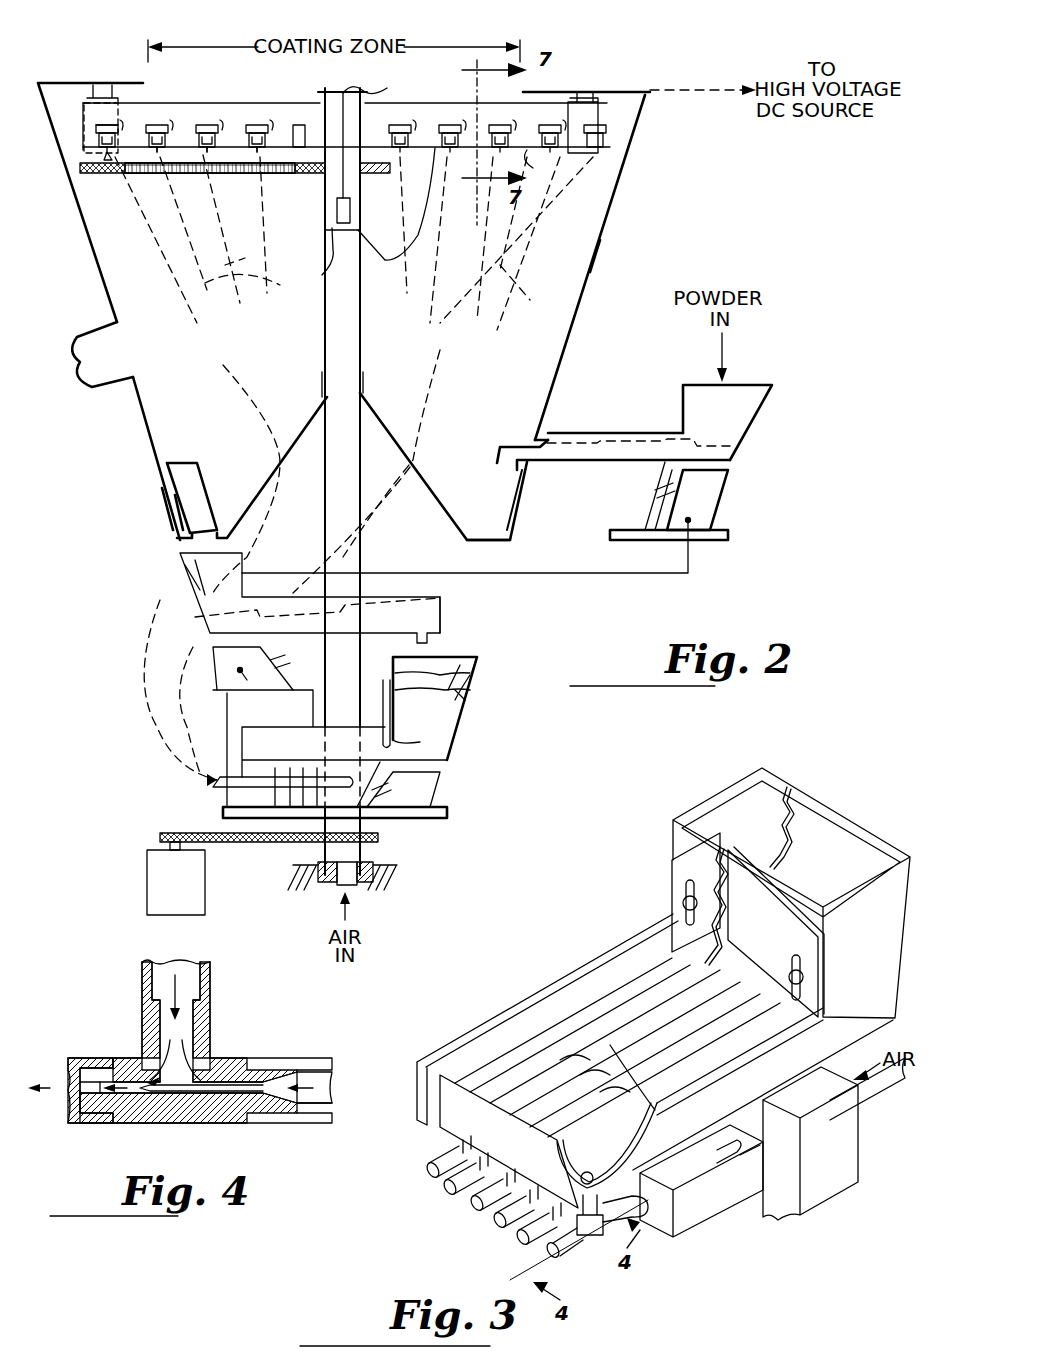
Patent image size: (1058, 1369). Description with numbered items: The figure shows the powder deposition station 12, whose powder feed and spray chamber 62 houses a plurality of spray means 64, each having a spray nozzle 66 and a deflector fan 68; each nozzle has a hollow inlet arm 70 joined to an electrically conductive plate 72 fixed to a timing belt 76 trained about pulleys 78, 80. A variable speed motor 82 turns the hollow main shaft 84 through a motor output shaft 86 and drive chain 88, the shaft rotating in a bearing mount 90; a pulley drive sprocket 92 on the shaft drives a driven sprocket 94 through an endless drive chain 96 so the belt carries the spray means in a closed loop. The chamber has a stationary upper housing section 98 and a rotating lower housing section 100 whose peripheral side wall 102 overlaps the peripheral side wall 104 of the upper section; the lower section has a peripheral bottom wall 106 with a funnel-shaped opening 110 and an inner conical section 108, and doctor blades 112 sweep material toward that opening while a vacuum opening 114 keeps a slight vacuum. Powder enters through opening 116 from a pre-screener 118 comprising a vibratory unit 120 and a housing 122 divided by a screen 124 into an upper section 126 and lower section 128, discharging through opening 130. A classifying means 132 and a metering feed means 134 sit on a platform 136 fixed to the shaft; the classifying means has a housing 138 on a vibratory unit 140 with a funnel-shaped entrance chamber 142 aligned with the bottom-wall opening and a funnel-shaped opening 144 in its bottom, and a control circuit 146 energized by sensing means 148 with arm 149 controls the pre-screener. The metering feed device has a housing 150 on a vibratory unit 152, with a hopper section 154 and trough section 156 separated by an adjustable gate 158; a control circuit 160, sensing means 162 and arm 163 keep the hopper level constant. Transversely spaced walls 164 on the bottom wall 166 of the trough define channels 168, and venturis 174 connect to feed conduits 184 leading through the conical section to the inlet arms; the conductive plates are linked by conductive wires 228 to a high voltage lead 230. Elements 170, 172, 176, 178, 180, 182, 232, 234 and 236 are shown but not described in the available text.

In FIG. 2, the powder deposition station 12 is at (627, 195).
In FIG. 2, the powder feed and spray chamber 62 is at (583, 293).
In FIG. 2, the spray means 64 is at (257, 127).
In FIG. 2, the spray nozzle 66 is at (107, 127).
In FIG. 2, the deflector fan 68 is at (127, 127).
In FIG. 2, the hollow inlet arm 70 is at (207, 153).
In FIG. 2, the electrically conductive plate 72 is at (230, 155).
In FIG. 2, the timing belt 76 is at (540, 110).
In FIG. 2, the pulley 78 is at (92, 85).
In FIG. 2, the pulley 80 is at (597, 102).
In FIG. 2, the variable speed motor 82 is at (160, 883).
In FIG. 2, the main shaft 84 is at (357, 565).
In FIG. 2, the motor output shaft 86 is at (170, 843).
In FIG. 2, the drive chain 88 is at (248, 843).
In FIG. 2, the bearing mount 90 is at (373, 870).
In FIG. 2, the pulley drive sprocket 92 is at (318, 173).
In FIG. 2, the driven sprocket 94 is at (112, 160).
In FIG. 2, the endless drive chain 96 is at (163, 155).
In FIG. 2, the upper housing section 98 is at (603, 243).
In FIG. 2, the lower housing section 100 is at (518, 527).
In FIG. 2, the peripheral side wall 102 is at (527, 497).
In FIG. 2, the peripheral side wall 104 is at (512, 493).
In FIG. 2, the peripheral bottom wall 106 is at (487, 533).
In FIG. 2, the inner conical section 108 is at (440, 503).
In FIG. 2, the funnel-shaped opening 110 is at (200, 553).
In FIG. 2, the doctor blades 112 is at (193, 487).
In FIG. 2, the opening 114 is at (113, 360).
In FIG. 2, the opening 116 is at (533, 440).
In FIG. 2, the powder pre-screener 118 is at (757, 430).
In FIG. 2, the vibratory unit 120 is at (713, 492).
In FIG. 2, the housing 122 is at (770, 397).
In FIG. 2, the screen 124 is at (697, 443).
In FIG. 2, the upper section 126 is at (637, 440).
In FIG. 2, the lower section 128 is at (620, 453).
In FIG. 2, the opening 130 is at (500, 467).
In FIG. 2, the classifying means 132 is at (193, 603).
In FIG. 2, the metering feed means 134 is at (483, 727).
In FIG. 2, the platform 136 is at (447, 813).
In FIG. 2, the housing 138 is at (205, 583).
In FIG. 2, the vibratory unit 140 is at (227, 657).
In FIG. 2, the funnel-shaped entrance chamber 142 is at (203, 560).
In FIG. 2, the funnel-shaped opening 144 is at (420, 638).
In FIG. 2, the control circuit 146 is at (653, 575).
In FIG. 2, the pressure responsive sensing means 148 is at (190, 600).
In FIG. 2, the arm 149 is at (240, 558).
In FIG. 2, the housing 150 is at (470, 717).
In FIG. 3, the housing 150 is at (627, 933).
In FIG. 2, the vibratory unit 152 is at (423, 787).
In FIG. 2, the hopper section 154 is at (470, 660).
In FIG. 3, the hopper section 154 is at (817, 832).
In FIG. 2, the trough section 156 is at (253, 737).
In FIG. 3, the trough section 156 is at (610, 993).
In FIG. 2, the adjustable gate 158 is at (443, 737).
In FIG. 3, the adjustable gate 158 is at (743, 977).
In FIG. 2, the control circuit 160 is at (480, 668).
In FIG. 2, the pressure responsive sensing means 162 is at (467, 687).
In FIG. 2, the arm 163 is at (458, 677).
In FIG. 3, the transversely spaced walls 164 is at (717, 1013).
In FIG. 3, the bottom wall 166 is at (730, 1043).
In FIG. 3, the channels 168 is at (510, 1043).
In FIG. 3, the trough bottom 170 is at (647, 1140).
In FIG. 3, the air inlet pipe 172 is at (593, 1240).
In FIG. 4, the air inlet pipe 172 is at (210, 983).
In FIG. 3, the venturi 174 is at (573, 1233).
In FIG. 4, the venturi 174 is at (220, 1122).
In FIG. 3, the block 176 is at (790, 1153).
In FIG. 3, the block 178 is at (690, 1210).
In FIG. 4, the nozzle 180 is at (200, 1093).
In FIG. 4, the mixing chamber 182 is at (147, 1097).
In FIG. 2, the feed conduit 184 is at (223, 365).
In FIG. 3, the feed conduit 184 is at (563, 1257).
In FIG. 4, the feed conduit 184 is at (80, 1060).
In FIG. 2, the conductive wires 228 is at (527, 157).
In FIG. 2, the high voltage lead 230 is at (385, 260).
In FIG. 2, the wire 232 is at (332, 232).
In FIG. 2, the connector block 234 is at (355, 200).
In FIG. 2, the lead wire 236 is at (387, 88).